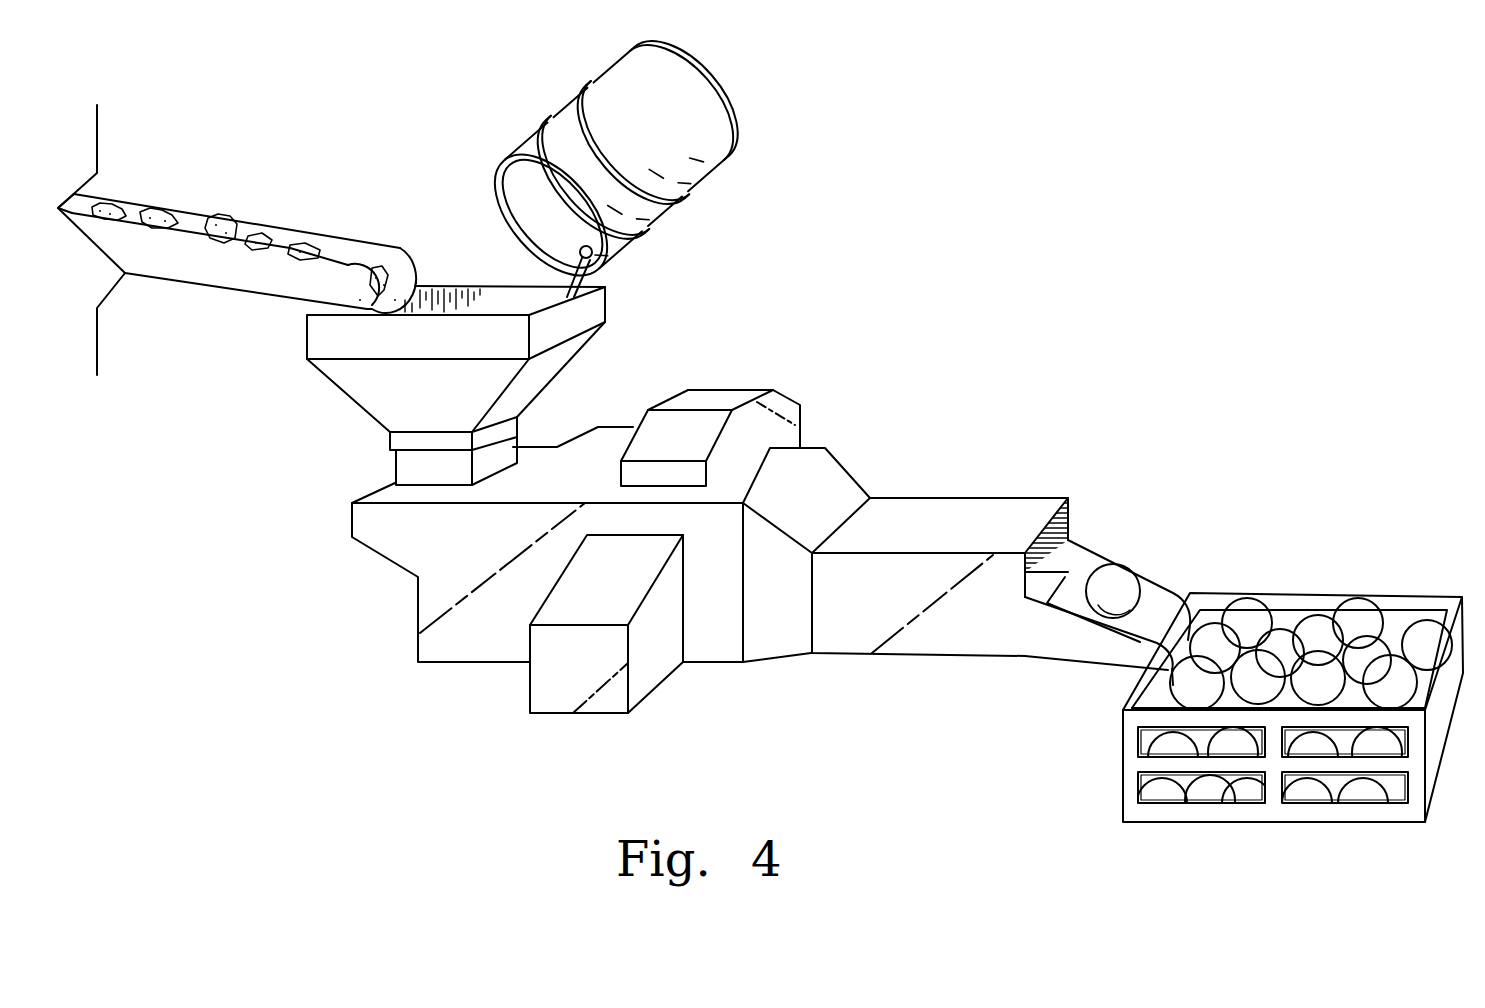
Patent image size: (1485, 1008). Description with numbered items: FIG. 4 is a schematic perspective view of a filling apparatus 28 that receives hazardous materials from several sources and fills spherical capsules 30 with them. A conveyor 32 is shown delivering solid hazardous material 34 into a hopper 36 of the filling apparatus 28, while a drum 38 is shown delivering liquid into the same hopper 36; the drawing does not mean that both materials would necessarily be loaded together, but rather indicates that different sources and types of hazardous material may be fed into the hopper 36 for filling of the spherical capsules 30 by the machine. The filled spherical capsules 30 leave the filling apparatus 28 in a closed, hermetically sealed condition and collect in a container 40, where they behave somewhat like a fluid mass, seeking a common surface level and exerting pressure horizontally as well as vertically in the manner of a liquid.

The filling apparatus 28 is at (908, 398).
The spherical capsules 30 is at (1123, 580).
The conveyor 32 is at (243, 280).
The solid hazardous material 34 is at (227, 218).
The hopper 36 is at (612, 317).
The drum 38 is at (708, 177).
The container 40 is at (1120, 747).